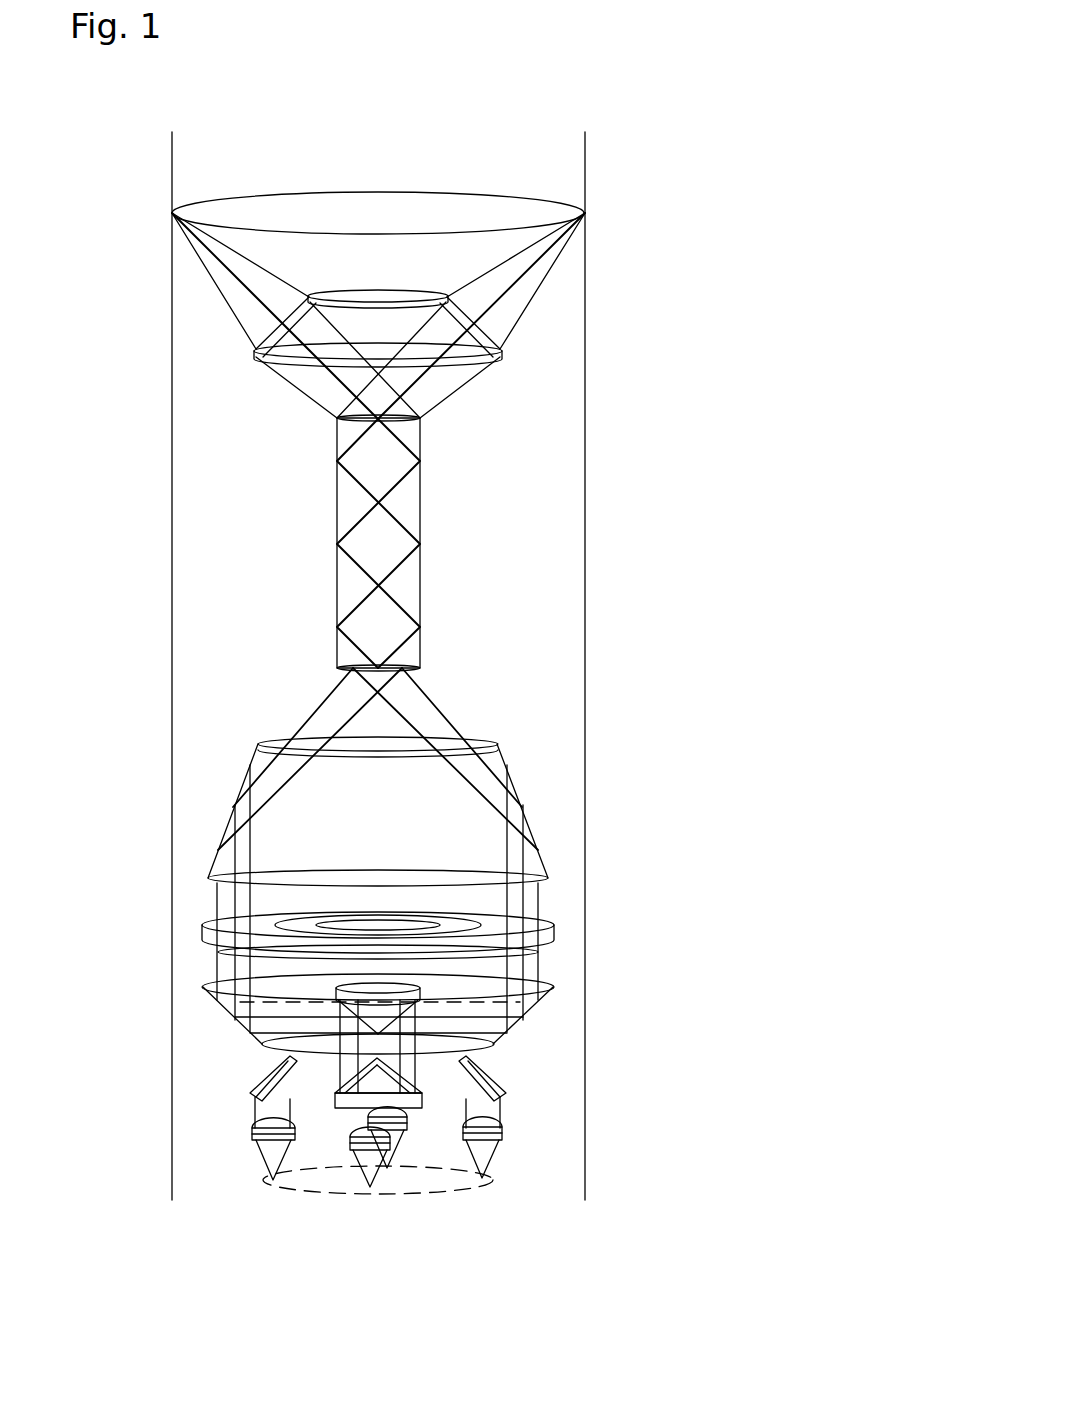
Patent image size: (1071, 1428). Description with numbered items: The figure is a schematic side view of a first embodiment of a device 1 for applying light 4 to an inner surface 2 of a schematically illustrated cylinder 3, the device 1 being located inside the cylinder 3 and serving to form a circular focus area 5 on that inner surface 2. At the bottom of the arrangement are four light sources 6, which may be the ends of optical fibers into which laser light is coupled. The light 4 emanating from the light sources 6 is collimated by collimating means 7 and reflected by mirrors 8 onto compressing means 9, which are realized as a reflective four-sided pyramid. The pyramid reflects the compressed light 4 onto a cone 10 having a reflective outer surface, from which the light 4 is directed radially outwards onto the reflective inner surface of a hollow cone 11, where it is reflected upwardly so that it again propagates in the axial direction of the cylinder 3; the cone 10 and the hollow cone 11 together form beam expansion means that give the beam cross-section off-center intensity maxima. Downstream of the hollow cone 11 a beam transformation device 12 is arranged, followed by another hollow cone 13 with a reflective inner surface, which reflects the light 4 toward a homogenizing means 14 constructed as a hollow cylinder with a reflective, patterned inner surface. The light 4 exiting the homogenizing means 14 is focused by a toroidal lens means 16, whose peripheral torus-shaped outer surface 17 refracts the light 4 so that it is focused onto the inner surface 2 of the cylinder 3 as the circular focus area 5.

The device 1 is at (358, 1240).
The inner surface 2 is at (172, 155).
The cylinder 3 is at (592, 475).
The light 4 is at (228, 293).
The circular focus area 5 is at (377, 193).
The light sources 6 is at (273, 1180).
The collimating means 7 is at (500, 1135).
The mirrors 8 is at (490, 1077).
The compressing means 9 is at (358, 1102).
The cone 10 is at (381, 988).
The hollow cone 11 is at (512, 1022).
The beam transformation device 12 is at (565, 918).
The hollow cone 13 is at (515, 795).
The homogenizing means 14 is at (430, 576).
The toroidal lens means 16 is at (496, 274).
The torus-shaped outer surface 17 is at (480, 337).